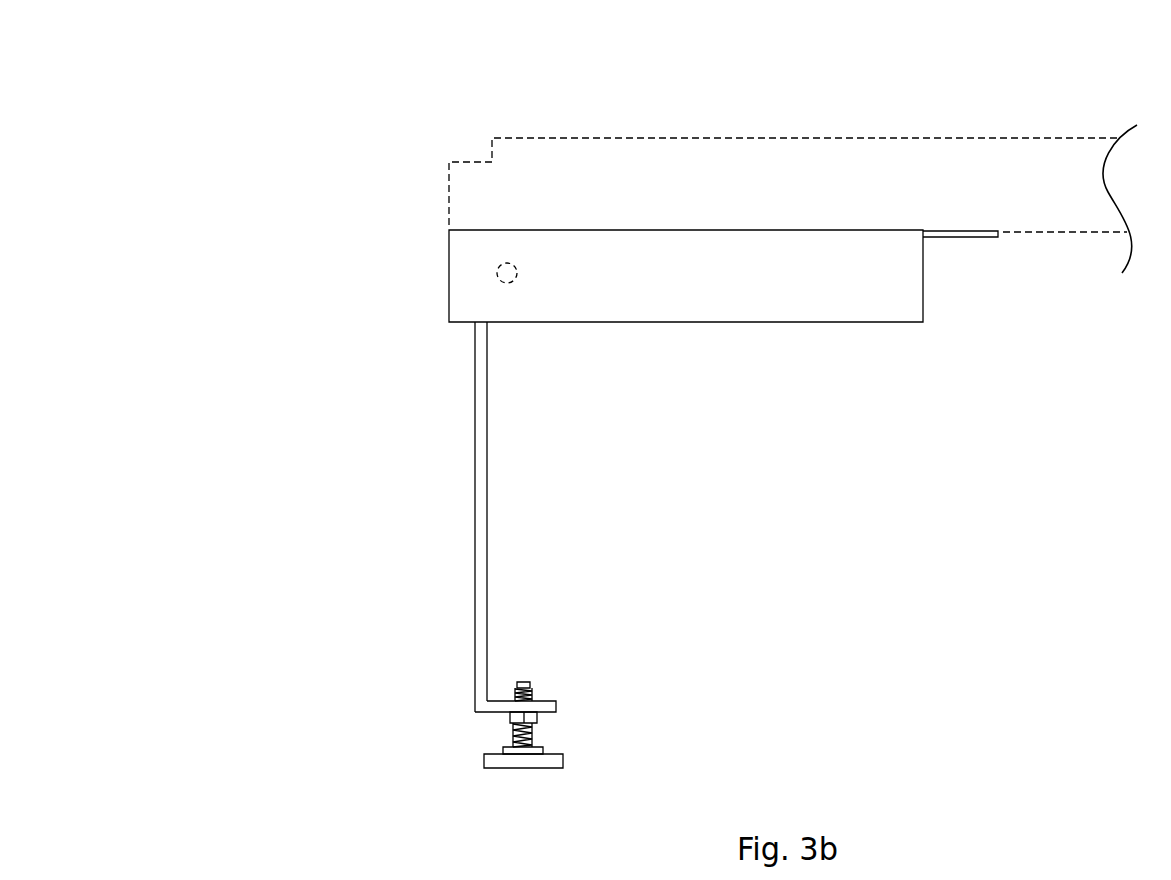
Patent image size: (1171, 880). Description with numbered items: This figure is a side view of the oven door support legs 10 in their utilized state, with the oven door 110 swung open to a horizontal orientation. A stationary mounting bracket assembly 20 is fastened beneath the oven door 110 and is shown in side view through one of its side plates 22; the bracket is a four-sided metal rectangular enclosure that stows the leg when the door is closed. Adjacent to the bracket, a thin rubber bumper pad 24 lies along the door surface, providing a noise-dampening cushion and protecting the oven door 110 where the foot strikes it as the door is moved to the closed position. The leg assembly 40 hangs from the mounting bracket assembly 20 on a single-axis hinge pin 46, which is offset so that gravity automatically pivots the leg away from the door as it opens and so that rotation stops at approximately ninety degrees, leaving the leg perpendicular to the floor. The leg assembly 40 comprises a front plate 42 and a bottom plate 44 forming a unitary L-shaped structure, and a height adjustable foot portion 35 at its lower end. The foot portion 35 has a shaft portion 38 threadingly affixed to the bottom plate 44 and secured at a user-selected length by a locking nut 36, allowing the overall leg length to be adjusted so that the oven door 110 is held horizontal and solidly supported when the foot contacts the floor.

The oven door support legs 10 is at (295, 137).
The oven door 110 is at (968, 182).
The mounting bracket assembly 20 is at (731, 327).
The side plates 22 is at (897, 308).
The bumper pad 24 is at (962, 236).
The hinge pin 46 is at (508, 283).
The leg assembly 40 is at (514, 579).
The front plate 42 is at (480, 381).
The bottom plate 44 is at (545, 700).
The shaft portion 38 is at (521, 683).
The locking nut 36 is at (528, 717).
The foot portion 35 is at (537, 762).